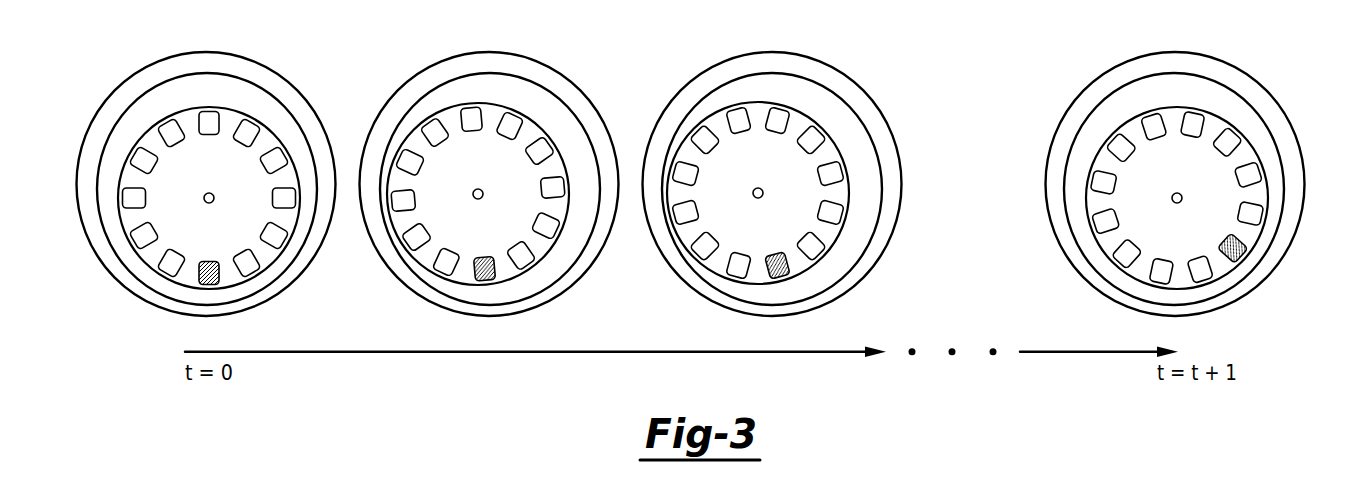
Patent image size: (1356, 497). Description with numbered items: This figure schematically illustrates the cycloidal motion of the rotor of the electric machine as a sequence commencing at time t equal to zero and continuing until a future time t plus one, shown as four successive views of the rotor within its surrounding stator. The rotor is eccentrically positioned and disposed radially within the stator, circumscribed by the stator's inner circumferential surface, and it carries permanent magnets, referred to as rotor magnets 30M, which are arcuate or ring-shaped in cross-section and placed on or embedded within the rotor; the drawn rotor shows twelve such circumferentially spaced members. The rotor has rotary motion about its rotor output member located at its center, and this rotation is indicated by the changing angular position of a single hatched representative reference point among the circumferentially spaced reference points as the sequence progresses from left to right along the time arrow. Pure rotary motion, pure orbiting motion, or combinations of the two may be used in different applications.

The rotor magnets 30M is at (141, 158).